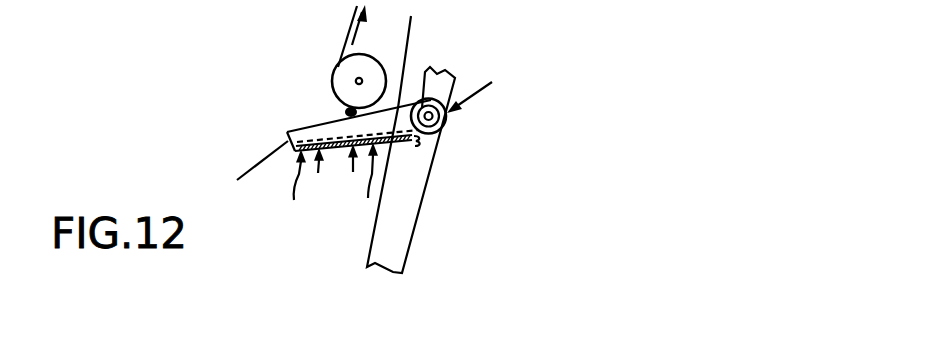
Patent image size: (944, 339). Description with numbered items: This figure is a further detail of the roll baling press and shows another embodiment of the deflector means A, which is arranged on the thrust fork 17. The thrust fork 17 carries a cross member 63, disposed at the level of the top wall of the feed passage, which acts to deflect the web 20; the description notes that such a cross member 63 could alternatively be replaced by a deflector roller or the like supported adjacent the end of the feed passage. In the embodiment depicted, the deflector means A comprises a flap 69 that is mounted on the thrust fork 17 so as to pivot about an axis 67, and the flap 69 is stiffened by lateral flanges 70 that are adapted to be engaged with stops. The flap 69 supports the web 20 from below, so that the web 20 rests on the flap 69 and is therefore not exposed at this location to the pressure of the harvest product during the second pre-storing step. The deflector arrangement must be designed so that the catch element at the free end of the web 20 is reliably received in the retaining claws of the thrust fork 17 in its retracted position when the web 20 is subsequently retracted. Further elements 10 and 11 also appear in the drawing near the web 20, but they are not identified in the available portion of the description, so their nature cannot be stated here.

The roller 10 is at (328, 57).
The arm / direction arrow 11 is at (333, 17).
The deflector means A is at (318, 96).
The thrust fork 17 is at (443, 69).
The web 20 is at (245, 171).
The cross member 63 is at (449, 100).
The axis 67 is at (432, 127).
The flap 69 is at (330, 189).
The lateral flanges 70 is at (392, 99).